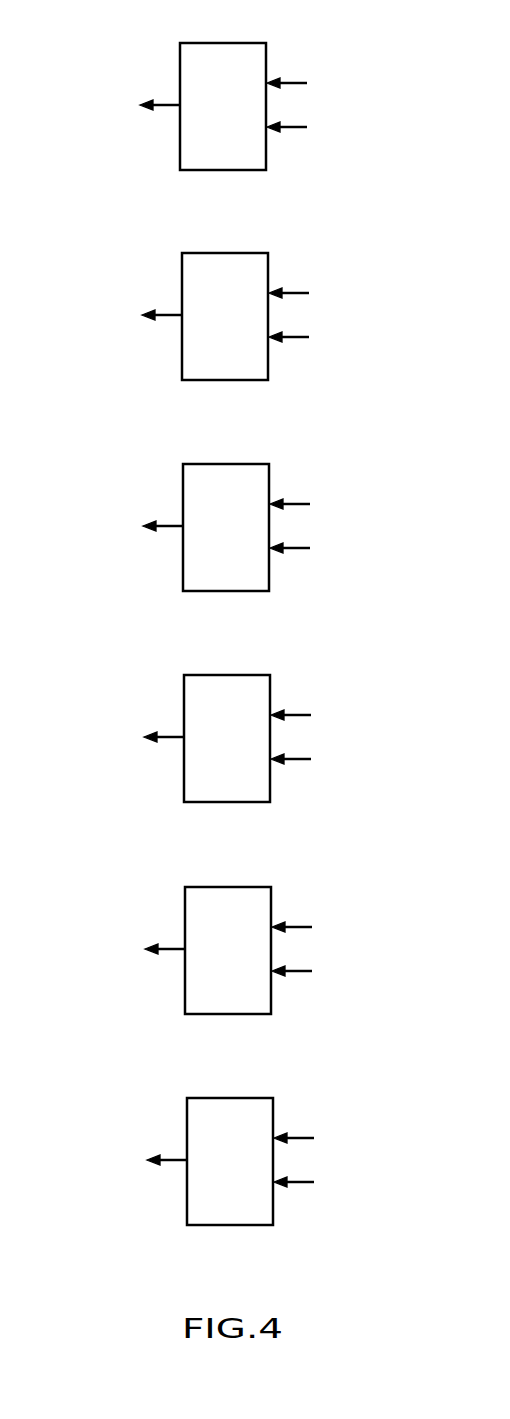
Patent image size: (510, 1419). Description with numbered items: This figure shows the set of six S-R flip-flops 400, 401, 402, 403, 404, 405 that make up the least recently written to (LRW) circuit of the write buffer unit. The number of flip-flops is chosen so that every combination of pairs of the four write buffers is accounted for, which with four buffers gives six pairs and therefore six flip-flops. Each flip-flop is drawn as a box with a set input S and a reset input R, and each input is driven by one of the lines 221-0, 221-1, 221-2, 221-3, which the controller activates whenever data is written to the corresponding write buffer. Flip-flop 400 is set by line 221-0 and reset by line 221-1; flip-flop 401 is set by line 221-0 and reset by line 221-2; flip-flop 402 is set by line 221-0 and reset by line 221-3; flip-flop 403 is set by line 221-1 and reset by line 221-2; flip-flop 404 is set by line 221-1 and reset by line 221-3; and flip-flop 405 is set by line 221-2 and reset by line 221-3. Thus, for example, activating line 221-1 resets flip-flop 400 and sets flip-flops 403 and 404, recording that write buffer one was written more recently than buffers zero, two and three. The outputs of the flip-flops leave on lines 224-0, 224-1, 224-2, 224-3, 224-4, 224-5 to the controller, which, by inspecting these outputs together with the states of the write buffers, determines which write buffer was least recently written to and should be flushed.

The S-R flip-flop 400 is at (183, 43).
The S-R flip-flop 401 is at (185, 253).
The S-R flip-flop 402 is at (186, 464).
The S-R flip-flop 403 is at (187, 675).
The S-R flip-flop 404 is at (188, 887).
The S-R flip-flop 405 is at (190, 1098).
The line 221-0 is at (330, 293).
The line 221-1 is at (331, 527).
The line 221-2 is at (333, 737).
The line 221-3 is at (333, 865).
The line 224-0 is at (118, 103).
The line 224-1 is at (120, 313).
The line 224-2 is at (121, 524).
The line 224-3 is at (122, 735).
The line 224-4 is at (123, 947).
The line 224-5 is at (125, 1158).